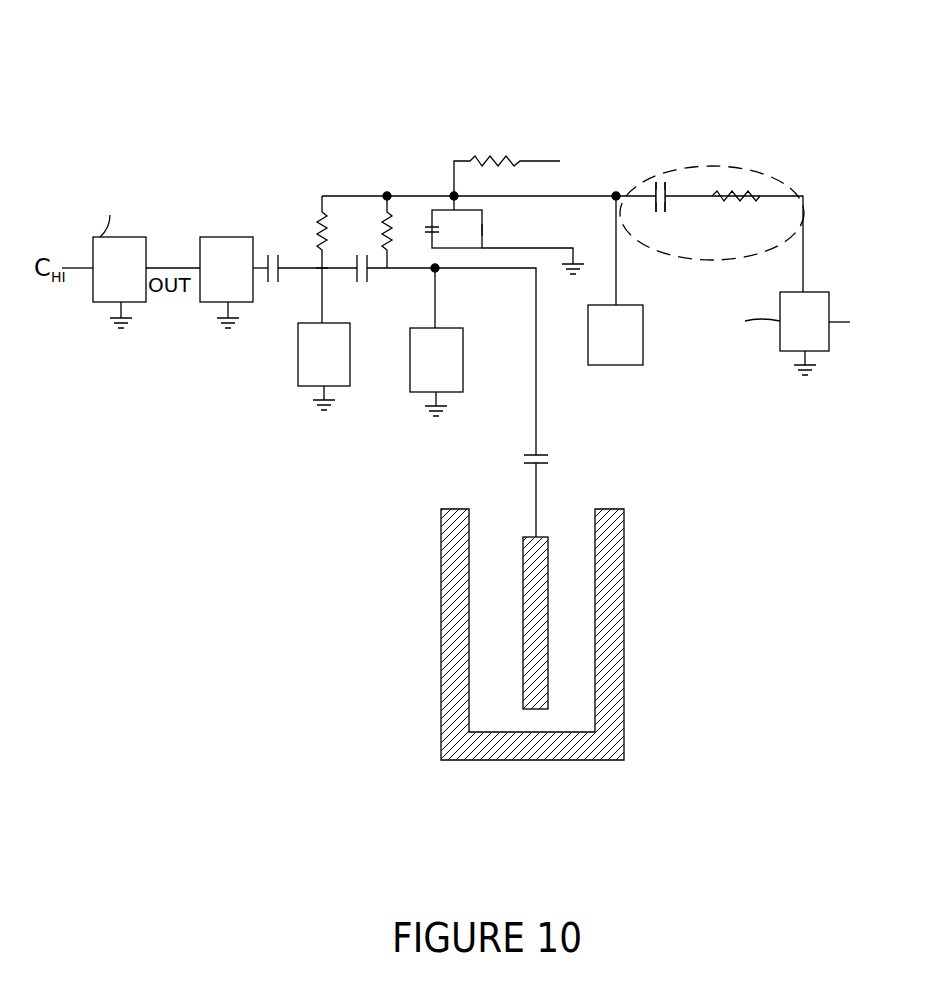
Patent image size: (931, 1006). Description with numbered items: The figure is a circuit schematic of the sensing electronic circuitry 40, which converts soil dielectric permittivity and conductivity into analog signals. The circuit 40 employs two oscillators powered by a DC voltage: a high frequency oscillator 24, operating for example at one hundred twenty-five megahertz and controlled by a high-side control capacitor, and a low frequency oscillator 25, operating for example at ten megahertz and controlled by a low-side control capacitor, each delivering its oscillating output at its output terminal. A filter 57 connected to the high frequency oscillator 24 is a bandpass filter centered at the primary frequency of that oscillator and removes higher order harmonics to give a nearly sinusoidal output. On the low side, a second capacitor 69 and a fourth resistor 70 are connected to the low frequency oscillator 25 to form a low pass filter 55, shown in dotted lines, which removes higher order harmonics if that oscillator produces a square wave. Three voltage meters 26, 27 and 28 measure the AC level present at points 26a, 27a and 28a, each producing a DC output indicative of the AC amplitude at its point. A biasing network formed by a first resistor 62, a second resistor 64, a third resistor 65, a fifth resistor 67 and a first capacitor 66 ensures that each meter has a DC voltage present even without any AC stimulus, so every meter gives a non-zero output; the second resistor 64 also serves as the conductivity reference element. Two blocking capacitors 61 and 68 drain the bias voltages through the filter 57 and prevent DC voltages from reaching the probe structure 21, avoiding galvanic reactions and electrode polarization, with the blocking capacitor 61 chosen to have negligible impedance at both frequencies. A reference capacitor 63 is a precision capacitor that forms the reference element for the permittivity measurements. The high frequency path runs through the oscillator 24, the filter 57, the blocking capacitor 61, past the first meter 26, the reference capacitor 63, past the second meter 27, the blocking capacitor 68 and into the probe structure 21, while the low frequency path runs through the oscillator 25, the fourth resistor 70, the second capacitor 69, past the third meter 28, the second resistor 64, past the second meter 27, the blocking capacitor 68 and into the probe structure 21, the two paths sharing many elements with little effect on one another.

The probe structure 21 is at (657, 700).
The high frequency oscillator 24 is at (146, 237).
The low frequency oscillator 25 is at (823, 292).
The first voltage meter 26 is at (298, 386).
The first measurement point 26a is at (322, 270).
The second voltage meter 27 is at (410, 392).
The second measurement point 27a is at (437, 270).
The third voltage meter 28 is at (643, 365).
The third measurement point 28a is at (618, 195).
The sensing electronic circuitry 40 is at (588, 112).
The low pass filter 55 is at (762, 175).
The filter 57 is at (237, 237).
The capacitor CB 61 is at (278, 255).
The resistor R1 62 is at (322, 212).
The capacitor CR 63 is at (367, 285).
The resistor R2 64 is at (392, 212).
The resistor R3 65 is at (505, 160).
The capacitor C1 66 is at (434, 210).
The resistor R5 67 is at (482, 230).
The capacitor CB 68 is at (546, 460).
The capacitor C2 69 is at (661, 182).
The resistor R4 70 is at (741, 190).